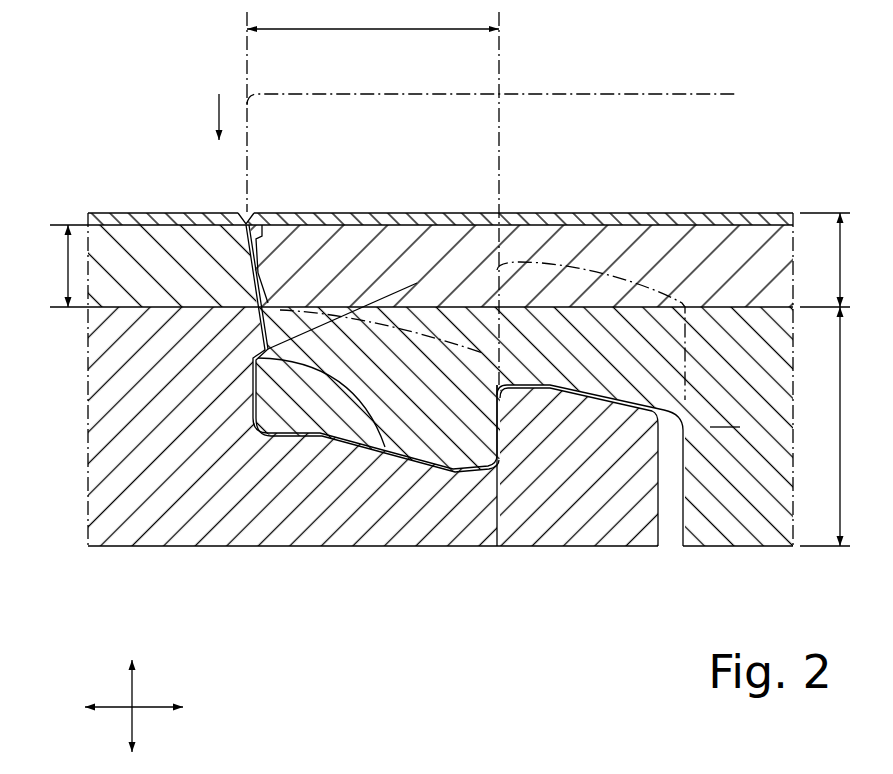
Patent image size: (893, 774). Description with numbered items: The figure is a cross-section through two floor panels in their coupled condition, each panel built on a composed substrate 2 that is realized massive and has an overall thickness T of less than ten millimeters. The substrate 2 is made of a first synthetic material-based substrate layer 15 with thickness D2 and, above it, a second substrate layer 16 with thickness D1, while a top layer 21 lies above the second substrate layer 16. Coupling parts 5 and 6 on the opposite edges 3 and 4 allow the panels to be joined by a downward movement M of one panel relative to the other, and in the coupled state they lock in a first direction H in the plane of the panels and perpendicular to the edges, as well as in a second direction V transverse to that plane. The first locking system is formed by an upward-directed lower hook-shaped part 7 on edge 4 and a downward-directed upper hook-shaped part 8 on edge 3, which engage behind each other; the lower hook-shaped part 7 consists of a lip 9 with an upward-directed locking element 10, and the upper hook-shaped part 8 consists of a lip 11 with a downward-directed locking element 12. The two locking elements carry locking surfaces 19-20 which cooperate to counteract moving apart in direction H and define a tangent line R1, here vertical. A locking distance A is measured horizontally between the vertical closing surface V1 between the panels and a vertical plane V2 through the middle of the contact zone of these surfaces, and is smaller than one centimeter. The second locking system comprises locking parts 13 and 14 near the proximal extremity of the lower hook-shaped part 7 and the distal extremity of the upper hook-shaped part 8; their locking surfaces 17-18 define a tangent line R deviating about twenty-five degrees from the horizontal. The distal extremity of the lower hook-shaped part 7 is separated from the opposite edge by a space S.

The composed substrate 2 is at (84, 373).
The edge 3 is at (311, 196).
The edge 4 is at (198, 195).
The coupling part 5 is at (470, 190).
The coupling part 6 is at (279, 577).
The lower hook-shaped part 7 is at (258, 496).
The upper hook-shaped part 8 is at (640, 338).
The lip 9 is at (365, 515).
The upward-directed locking element 10 is at (545, 425).
The lip 11 is at (592, 327).
The downward-directed locking element 12 is at (430, 413).
The locking part 13 is at (258, 352).
The locking part 14 is at (229, 265).
The first substrate layer 15 is at (447, 522).
The second substrate layer 16 is at (115, 260).
The locking surfaces 17-18 is at (479, 518).
The locking surfaces 19-20 is at (497, 428).
The top layer 21 is at (212, 213).
The tangent line R is at (392, 293).
The tangent line R1 is at (482, 540).
The space S is at (672, 480).
The downward movement M is at (218, 113).
The vertical closing surface V1 is at (247, 71).
The vertical plane V2 is at (502, 62).
The locking distance A is at (373, 17).
The thickness D1 is at (61, 266).
The thickness D2 is at (825, 426).
The thickness T is at (825, 260).
The second direction V is at (137, 690).
The first direction H is at (136, 720).